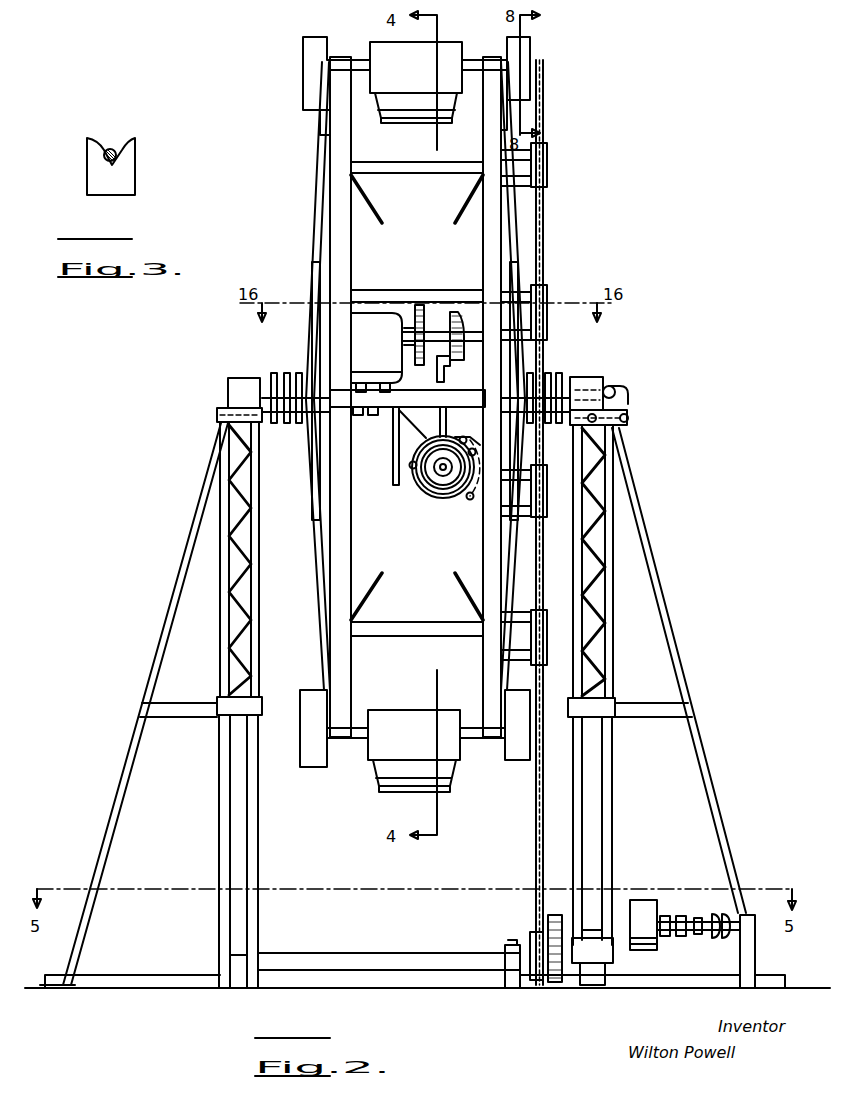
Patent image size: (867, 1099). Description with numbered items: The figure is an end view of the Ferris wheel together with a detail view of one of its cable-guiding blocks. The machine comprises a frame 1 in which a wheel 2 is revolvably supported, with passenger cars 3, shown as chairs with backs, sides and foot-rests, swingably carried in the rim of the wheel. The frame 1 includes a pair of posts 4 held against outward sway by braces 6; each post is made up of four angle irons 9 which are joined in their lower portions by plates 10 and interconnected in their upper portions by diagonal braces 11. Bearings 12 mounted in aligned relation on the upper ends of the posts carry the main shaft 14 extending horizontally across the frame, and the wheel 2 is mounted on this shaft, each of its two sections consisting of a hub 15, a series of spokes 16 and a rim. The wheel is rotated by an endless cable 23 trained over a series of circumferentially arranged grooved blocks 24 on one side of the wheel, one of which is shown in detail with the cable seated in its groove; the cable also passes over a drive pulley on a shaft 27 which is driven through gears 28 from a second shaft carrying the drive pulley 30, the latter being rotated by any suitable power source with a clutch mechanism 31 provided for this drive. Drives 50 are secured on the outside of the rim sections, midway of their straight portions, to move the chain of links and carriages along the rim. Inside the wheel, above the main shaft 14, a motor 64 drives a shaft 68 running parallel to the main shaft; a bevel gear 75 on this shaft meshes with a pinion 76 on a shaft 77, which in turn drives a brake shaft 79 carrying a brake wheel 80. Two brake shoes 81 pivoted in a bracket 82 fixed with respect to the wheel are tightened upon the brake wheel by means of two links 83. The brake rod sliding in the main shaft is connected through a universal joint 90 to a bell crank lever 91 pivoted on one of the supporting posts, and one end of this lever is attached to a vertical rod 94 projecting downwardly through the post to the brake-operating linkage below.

In FIG. 2, the frame 1 is at (735, 712).
In FIG. 2, the wheel 2 is at (326, 214).
In FIG. 2, the cars 3 is at (446, 42).
In FIG. 2, the posts 4 is at (218, 804).
In FIG. 2, the braces 6 is at (126, 766).
In FIG. 2, the angle irons 9 is at (590, 834).
In FIG. 2, the plates 10 is at (596, 778).
In FIG. 2, the diagonal braces 11 is at (604, 668).
In FIG. 2, the bearings 12 is at (588, 380).
In FIG. 2, the main shaft 14 is at (407, 401).
In FIG. 2, the hub 15 is at (287, 373).
In FIG. 2, the spokes 16 is at (318, 262).
In FIG. 3, the endless cable 23 is at (113, 150).
In FIG. 2, the endless cable 23 is at (544, 256).
In FIG. 3, the grooved blocks 24 is at (138, 163).
In FIG. 2, the grooved blocks 24 is at (547, 485).
In FIG. 2, the shaft 27 is at (524, 944).
In FIG. 2, the gears 28 is at (553, 984).
In FIG. 2, the drive pulley 30 is at (646, 900).
In FIG. 2, the clutch mechanism 31 is at (699, 944).
In FIG. 2, the drives 50 is at (300, 735).
In FIG. 2, the motor 64 is at (360, 330).
In FIG. 2, the shaft 68 is at (442, 335).
In FIG. 2, the bevel gear 75 is at (452, 314).
In FIG. 2, the pinion 76 is at (436, 368).
In FIG. 2, the shaft 77 is at (440, 428).
In FIG. 2, the brake shaft 79 is at (430, 482).
In FIG. 2, the brake wheel 80 is at (444, 476).
In FIG. 2, the brake shoes 81 is at (424, 494).
In FIG. 2, the bracket 82 is at (396, 470).
In FIG. 2, the links 83 is at (466, 500).
In FIG. 2, the universal joint 90 is at (613, 386).
In FIG. 2, the bell crank lever 91 is at (630, 406).
In FIG. 2, the vertical rod 94 is at (598, 606).